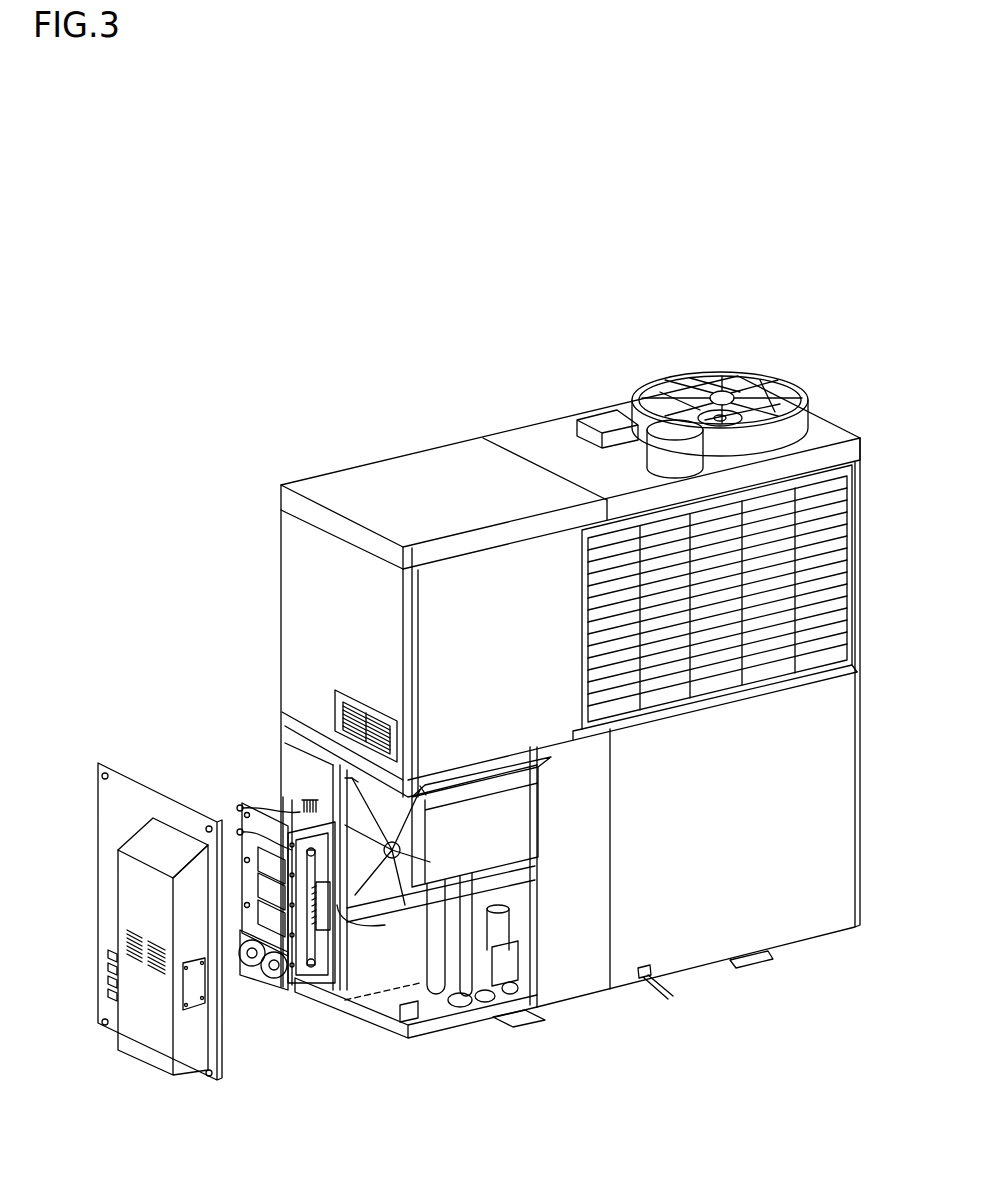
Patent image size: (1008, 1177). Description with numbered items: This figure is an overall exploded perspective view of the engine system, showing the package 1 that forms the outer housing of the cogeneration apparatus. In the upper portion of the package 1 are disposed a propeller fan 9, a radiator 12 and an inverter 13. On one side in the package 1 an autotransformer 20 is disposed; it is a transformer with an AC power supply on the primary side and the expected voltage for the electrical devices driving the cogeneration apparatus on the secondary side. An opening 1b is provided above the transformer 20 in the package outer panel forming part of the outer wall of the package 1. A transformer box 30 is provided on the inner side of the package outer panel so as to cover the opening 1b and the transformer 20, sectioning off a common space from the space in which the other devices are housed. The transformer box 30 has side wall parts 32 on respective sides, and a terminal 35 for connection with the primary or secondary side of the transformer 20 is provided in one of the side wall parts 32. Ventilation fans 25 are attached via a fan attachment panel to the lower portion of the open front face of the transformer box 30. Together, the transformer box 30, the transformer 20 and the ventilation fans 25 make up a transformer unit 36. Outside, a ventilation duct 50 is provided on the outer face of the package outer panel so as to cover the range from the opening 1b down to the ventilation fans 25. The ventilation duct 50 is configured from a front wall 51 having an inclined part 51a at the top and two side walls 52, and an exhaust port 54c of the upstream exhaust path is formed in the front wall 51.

The package 1 is at (378, 462).
The opening above the transformer 1b is at (130, 797).
The propeller fan 9 is at (728, 385).
The radiator 12 is at (830, 578).
The inverter 13 is at (503, 612).
The autotransformer 20 is at (243, 823).
The ventilation fans 25 is at (258, 975).
The transformer box 30 is at (262, 850).
The side wall parts 32 is at (312, 968).
The terminal 35 is at (322, 913).
The transformer unit 36 is at (293, 1000).
The ventilation duct 50 is at (130, 967).
The front wall 51 is at (115, 1030).
The inclined part 51a is at (158, 847).
The side walls 52 is at (192, 1043).
The exhaust port 54c is at (122, 942).